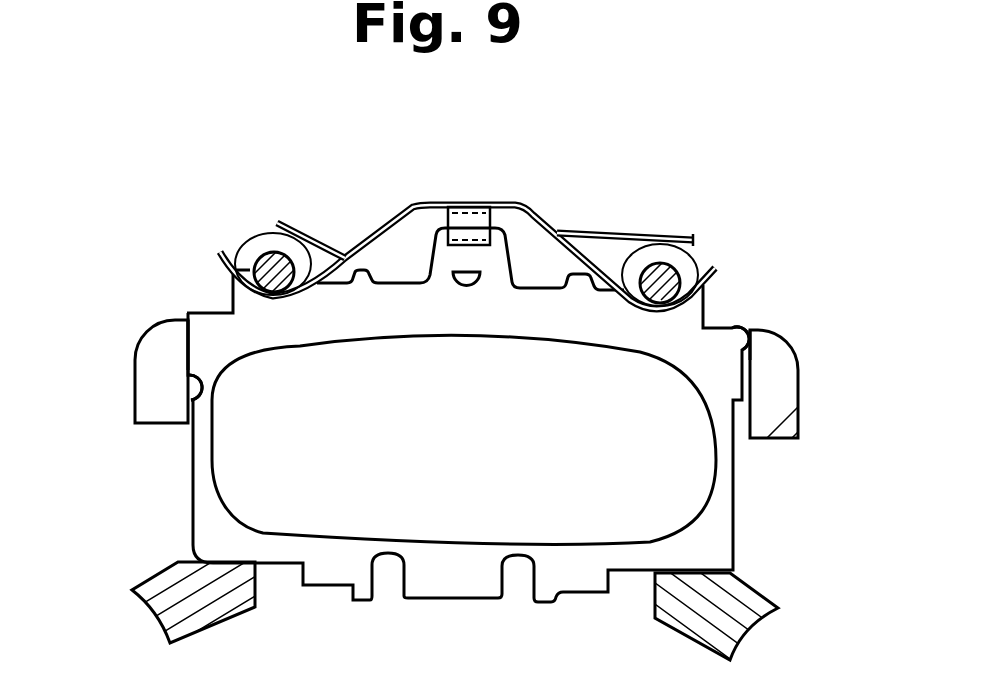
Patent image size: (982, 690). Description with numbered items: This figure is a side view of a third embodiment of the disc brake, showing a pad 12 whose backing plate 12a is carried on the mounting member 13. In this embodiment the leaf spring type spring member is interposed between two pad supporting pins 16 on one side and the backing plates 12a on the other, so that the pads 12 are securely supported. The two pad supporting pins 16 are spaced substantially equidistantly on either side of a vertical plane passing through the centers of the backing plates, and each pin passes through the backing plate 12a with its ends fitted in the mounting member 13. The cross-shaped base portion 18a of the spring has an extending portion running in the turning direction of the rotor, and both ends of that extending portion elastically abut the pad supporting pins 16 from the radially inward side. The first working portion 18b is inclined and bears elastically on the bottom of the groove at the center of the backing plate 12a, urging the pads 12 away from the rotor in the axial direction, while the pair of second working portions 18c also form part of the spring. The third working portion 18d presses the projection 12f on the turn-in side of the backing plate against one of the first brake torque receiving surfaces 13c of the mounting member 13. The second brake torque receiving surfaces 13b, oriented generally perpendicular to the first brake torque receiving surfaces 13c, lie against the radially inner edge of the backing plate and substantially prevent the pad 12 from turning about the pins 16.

The pad 12 is at (672, 490).
The backing plate 12a is at (663, 343).
The projection 12f is at (207, 333).
The mounting member 13 is at (156, 405).
The second brake torque receiving surface 13b is at (227, 562).
The first brake torque receiving surface 13c is at (188, 368).
The pad supporting pin 16 is at (268, 265).
The base portion 18a is at (525, 207).
The first working portion 18b is at (473, 228).
The second working portion 18c is at (647, 235).
The third working portion 18d is at (317, 230).